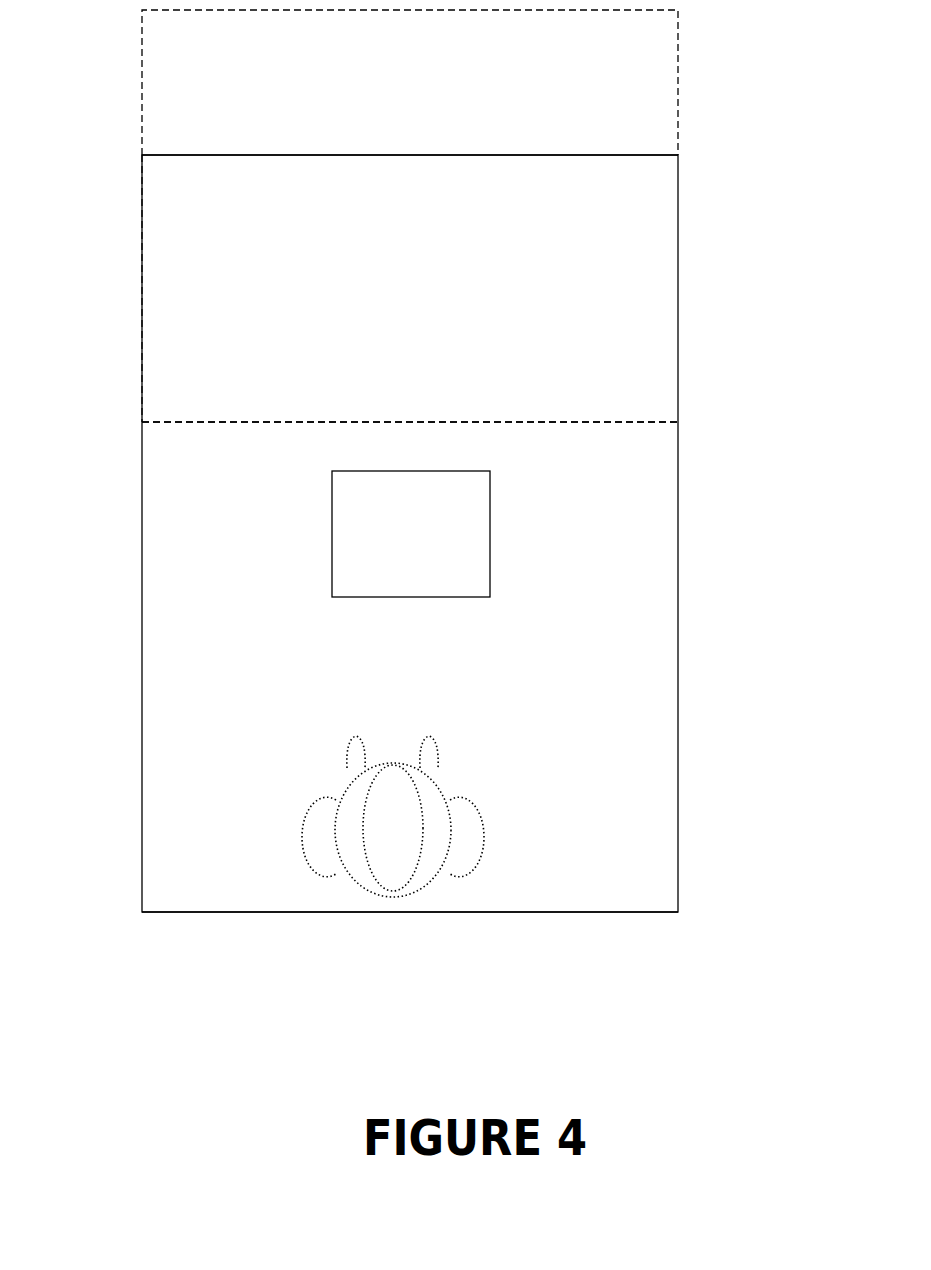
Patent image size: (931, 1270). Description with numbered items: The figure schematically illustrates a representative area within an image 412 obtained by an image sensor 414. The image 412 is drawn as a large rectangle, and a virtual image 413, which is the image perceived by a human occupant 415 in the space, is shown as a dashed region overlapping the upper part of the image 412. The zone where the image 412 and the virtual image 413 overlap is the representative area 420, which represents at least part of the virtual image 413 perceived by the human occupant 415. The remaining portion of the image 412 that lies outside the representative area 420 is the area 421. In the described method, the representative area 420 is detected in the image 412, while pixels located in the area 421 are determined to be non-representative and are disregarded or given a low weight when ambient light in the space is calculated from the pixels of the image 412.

The image 412 is at (142, 816).
The virtual image 413 is at (678, 106).
The image sensor 414 is at (462, 583).
The human occupant 415 is at (435, 877).
The representative area 420 is at (640, 331).
The area 421 is at (640, 737).